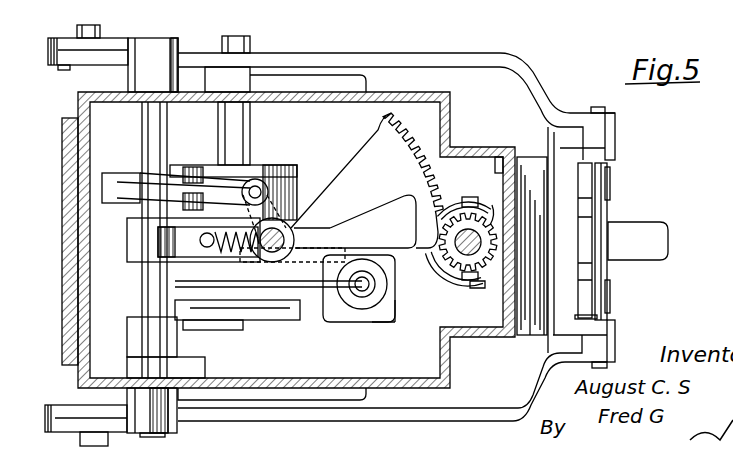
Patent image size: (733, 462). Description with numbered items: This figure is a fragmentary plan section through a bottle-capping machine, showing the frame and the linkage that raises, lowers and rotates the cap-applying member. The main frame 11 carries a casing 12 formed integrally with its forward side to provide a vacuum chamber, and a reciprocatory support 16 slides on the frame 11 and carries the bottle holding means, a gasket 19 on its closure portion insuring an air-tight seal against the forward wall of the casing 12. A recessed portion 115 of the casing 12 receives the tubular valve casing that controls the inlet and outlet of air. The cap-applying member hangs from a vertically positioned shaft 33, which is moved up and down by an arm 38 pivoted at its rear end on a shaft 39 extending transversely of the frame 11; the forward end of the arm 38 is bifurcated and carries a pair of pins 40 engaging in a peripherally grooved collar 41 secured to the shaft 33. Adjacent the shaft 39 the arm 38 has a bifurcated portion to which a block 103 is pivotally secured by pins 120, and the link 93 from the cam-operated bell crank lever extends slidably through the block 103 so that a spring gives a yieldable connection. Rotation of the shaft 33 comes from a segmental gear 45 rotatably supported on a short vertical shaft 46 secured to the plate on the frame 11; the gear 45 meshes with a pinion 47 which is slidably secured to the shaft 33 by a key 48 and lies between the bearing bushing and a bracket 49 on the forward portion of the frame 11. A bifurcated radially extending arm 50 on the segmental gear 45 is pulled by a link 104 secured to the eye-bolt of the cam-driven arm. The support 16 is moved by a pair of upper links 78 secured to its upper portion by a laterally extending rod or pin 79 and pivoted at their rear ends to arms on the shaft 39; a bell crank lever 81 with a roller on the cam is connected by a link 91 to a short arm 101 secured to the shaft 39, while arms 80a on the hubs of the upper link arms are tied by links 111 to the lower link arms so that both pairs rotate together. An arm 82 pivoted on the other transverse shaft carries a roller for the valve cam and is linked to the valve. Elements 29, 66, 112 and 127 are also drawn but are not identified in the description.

The main frame 11 is at (320, 96).
The casing 12 is at (392, 322).
The reciprocatory support 16 is at (568, 234).
The gasket 19 is at (548, 206).
The knob 29 is at (670, 250).
The shaft 33 is at (462, 250).
The arm 38 is at (168, 222).
The shaft 39 is at (142, 143).
The pins 40 is at (470, 197).
The collar 41 is at (492, 204).
The segmental gear 45 is at (408, 163).
The shaft 46 is at (290, 228).
The pinion 47 is at (498, 330).
The key 48 is at (487, 290).
The bracket 49 is at (518, 170).
The arm 50 is at (278, 202).
The adjusting screw 66 is at (250, 141).
The upper links 78 is at (455, 55).
The rod or pin 79 is at (600, 232).
The arms 80a is at (118, 424).
The bell crank lever 81 is at (62, 44).
The arm 82 is at (337, 290).
The link 91 is at (214, 322).
The link 93 is at (209, 246).
The short arm 101 is at (163, 322).
The block 103 is at (268, 180).
The link 104 is at (178, 190).
The links 111 is at (98, 30).
The clamp 112 is at (125, 40).
The recessed portion 115 is at (333, 320).
The pins 120 is at (288, 214).
The spring 127 is at (246, 246).